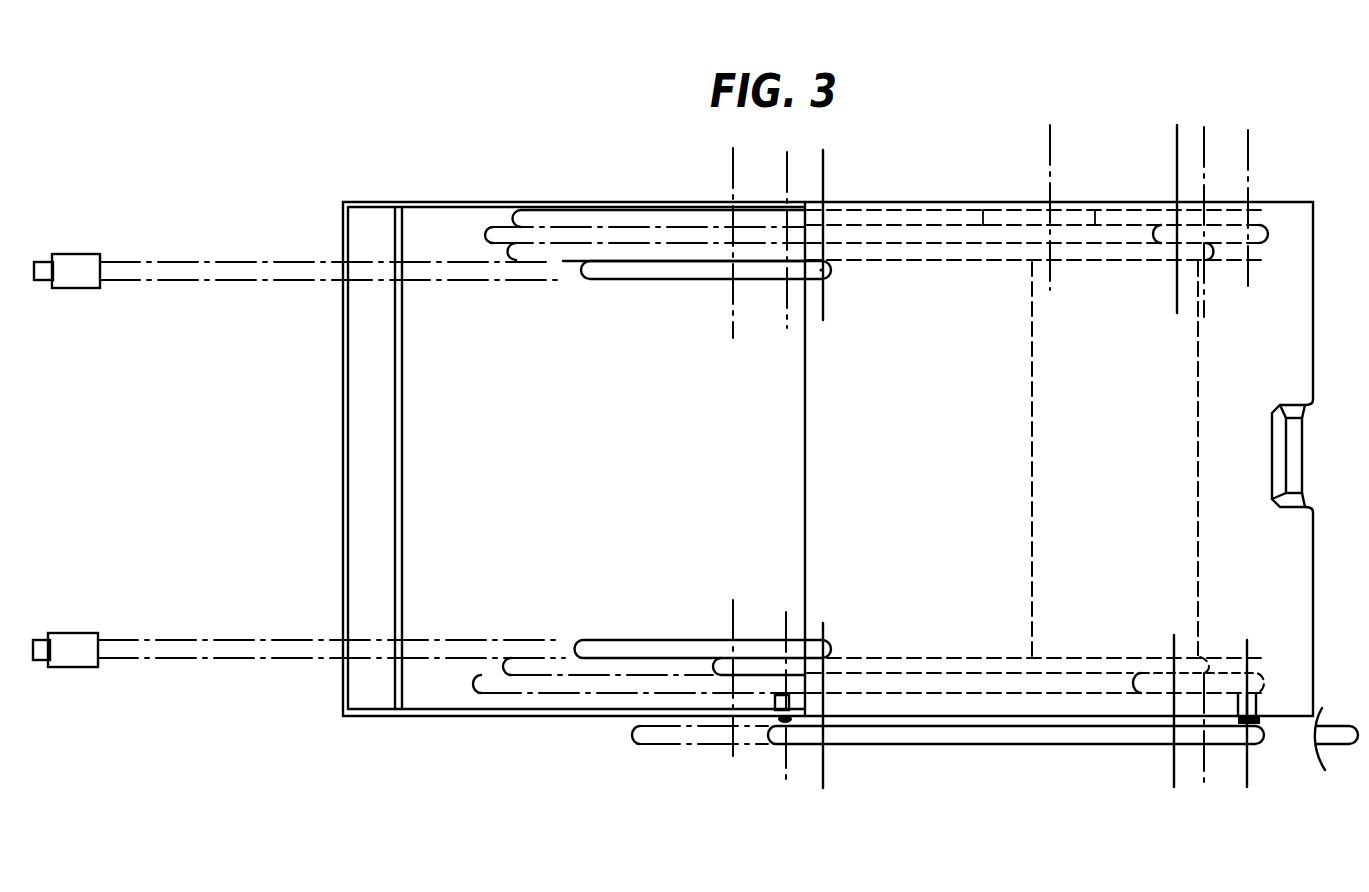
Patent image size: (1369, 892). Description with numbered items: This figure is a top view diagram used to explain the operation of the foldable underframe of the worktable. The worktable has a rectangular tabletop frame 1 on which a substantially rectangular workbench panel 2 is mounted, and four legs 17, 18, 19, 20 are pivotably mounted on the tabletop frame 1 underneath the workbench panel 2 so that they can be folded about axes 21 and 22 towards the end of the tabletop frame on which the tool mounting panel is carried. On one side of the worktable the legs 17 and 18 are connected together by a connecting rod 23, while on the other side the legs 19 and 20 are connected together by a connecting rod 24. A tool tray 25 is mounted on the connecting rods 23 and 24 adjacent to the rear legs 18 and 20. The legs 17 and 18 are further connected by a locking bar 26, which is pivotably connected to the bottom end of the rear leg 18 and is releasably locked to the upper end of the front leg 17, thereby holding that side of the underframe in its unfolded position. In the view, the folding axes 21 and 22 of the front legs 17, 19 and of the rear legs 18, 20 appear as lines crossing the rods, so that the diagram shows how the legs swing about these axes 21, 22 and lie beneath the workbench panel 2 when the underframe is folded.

The tabletop frame 1 is at (402, 518).
The workbench panel 2 is at (1295, 358).
The leg 17 is at (668, 650).
The leg 18 is at (1160, 682).
The leg 19 is at (693, 268).
The leg 20 is at (1160, 237).
The axis 21 is at (733, 166).
The axis 22 is at (1177, 147).
The connecting rod 23 is at (918, 662).
The connecting rod 24 is at (985, 248).
The tool tray 25 is at (1200, 365).
The locking bar 26 is at (1045, 734).